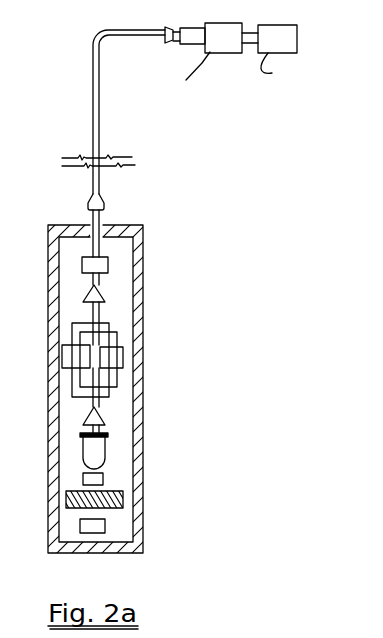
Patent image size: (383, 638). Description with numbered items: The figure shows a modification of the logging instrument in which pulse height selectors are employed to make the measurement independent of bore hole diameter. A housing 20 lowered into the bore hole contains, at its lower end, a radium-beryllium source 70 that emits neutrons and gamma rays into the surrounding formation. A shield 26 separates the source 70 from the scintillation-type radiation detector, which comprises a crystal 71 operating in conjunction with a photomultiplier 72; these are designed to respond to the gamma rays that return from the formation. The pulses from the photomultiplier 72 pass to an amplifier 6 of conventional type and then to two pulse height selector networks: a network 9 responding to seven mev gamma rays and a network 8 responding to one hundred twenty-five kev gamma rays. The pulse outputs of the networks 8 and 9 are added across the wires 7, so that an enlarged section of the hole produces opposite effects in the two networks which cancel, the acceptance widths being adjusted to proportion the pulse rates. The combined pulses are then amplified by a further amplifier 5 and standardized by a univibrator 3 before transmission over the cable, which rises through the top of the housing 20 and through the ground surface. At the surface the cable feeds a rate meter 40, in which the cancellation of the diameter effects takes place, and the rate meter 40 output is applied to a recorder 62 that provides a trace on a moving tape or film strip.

The housing 20 is at (141, 235).
The univibrator 3 is at (102, 266).
The amplifier 5 is at (103, 295).
The wires 7 is at (103, 319).
The pulse height selector network 8 is at (70, 358).
The pulse height selector network 9 is at (118, 355).
The amplifier 6 is at (103, 421).
The photomultiplier 72 is at (97, 457).
The crystal 71 is at (105, 478).
The shield 26 is at (122, 505).
The radium-beryllium source 70 is at (105, 527).
The rate meter 40 is at (187, 57).
The recorder 62 is at (306, 53).